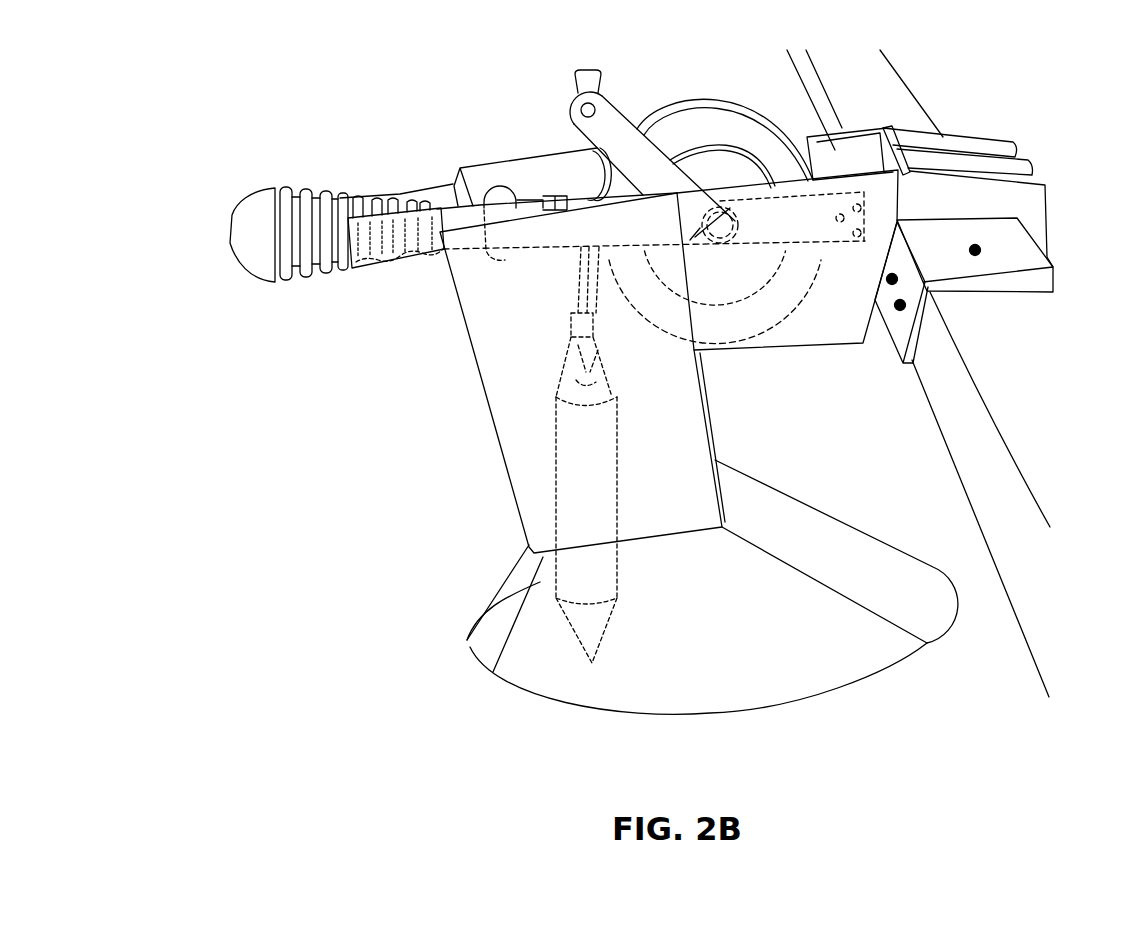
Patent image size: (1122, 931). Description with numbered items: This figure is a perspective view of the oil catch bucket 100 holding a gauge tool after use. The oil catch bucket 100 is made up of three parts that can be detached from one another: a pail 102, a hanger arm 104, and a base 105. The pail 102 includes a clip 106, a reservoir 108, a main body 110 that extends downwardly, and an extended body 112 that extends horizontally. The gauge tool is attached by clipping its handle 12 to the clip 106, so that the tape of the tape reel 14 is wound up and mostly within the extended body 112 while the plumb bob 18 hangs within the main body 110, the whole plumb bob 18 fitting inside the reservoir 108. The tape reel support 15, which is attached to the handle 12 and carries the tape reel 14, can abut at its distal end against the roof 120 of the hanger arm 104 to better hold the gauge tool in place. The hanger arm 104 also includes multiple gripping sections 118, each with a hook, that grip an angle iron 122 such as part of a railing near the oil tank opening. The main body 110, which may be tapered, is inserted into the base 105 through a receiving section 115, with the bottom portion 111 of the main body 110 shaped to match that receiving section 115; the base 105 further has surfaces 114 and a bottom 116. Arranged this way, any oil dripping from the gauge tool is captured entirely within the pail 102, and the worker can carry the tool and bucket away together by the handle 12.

The oil catch bucket 100 is at (330, 95).
The pail 102 is at (448, 156).
The hanger arm 104 is at (972, 112).
The base 105 is at (470, 570).
The clip 106 is at (406, 263).
The reservoir 108 is at (573, 167).
The main body 110 is at (480, 387).
The bottom portion 111 is at (483, 612).
The extended body 112 is at (800, 333).
The surfaces 114 is at (527, 665).
The receiving section 115 is at (722, 485).
The bottom 116 is at (790, 706).
The gripping sections 118 is at (975, 203).
The roof 120 is at (840, 150).
The angle iron 122 is at (903, 330).
The handle 12 is at (347, 193).
The tape reel 14 is at (745, 337).
The tape reel support 15 is at (565, 203).
The plumb bob 18 is at (555, 483).